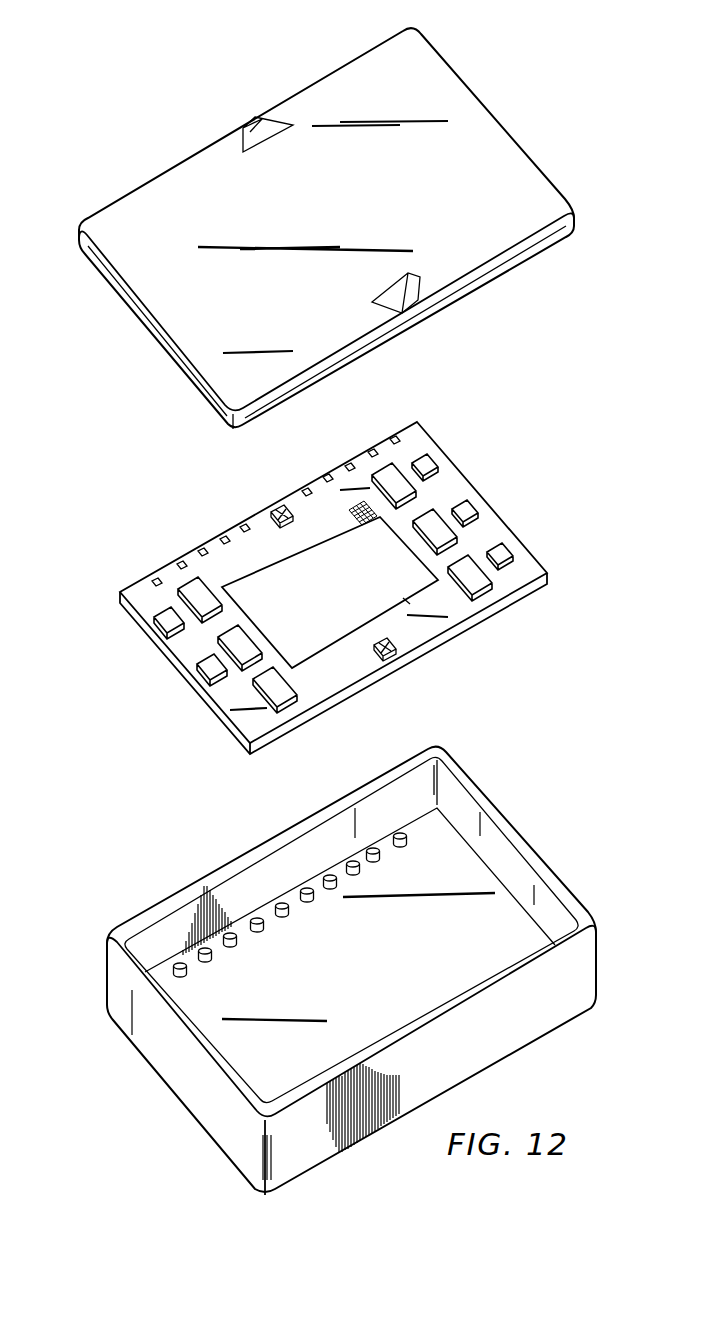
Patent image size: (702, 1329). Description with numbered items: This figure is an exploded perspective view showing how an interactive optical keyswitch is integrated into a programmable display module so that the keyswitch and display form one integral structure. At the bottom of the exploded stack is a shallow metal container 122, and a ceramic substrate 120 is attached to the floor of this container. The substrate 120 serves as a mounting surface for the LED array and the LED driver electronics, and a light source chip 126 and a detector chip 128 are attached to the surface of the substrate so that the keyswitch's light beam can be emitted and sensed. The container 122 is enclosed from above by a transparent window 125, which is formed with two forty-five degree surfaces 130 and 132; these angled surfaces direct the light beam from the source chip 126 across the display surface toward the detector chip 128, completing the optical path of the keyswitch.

The ceramic substrate 120 is at (333, 588).
The shallow metal container 122 is at (238, 841).
The transparent window 125 is at (316, 228).
The light source chip 126 is at (275, 511).
The detector chip 128 is at (393, 662).
The 45° surface 130 is at (246, 112).
The 45° surface 132 is at (405, 297).